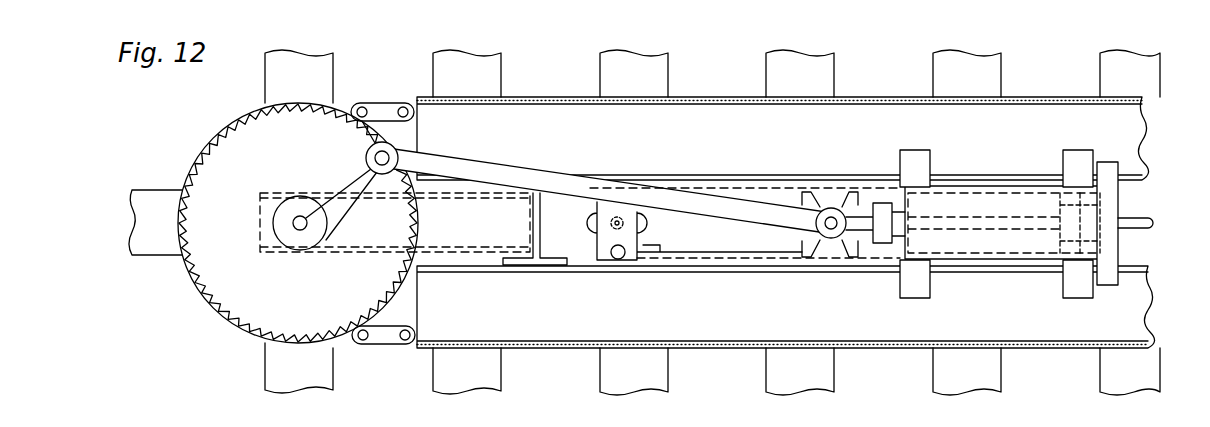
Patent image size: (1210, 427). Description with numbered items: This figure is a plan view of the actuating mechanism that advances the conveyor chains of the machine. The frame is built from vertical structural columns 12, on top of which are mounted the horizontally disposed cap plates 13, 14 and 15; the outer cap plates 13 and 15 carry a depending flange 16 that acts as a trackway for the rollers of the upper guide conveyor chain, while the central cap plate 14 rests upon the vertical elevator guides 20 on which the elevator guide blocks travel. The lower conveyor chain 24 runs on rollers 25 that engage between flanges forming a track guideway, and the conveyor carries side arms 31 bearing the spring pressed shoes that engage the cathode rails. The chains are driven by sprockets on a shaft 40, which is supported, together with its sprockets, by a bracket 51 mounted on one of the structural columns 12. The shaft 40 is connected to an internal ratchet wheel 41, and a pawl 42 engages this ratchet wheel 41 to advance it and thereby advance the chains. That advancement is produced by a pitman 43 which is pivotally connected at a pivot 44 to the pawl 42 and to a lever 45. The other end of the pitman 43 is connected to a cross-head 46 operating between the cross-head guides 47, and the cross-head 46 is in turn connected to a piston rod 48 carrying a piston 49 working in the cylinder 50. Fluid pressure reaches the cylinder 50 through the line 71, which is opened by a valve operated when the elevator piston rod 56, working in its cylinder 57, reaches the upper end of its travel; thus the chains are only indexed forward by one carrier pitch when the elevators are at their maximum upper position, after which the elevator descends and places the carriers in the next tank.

The vertical structural column 12 is at (538, 266).
The cap plate 13 is at (1136, 130).
The central cap plate 14 is at (640, 236).
The cap plate 15 is at (1140, 314).
The depending flange 16 is at (712, 98).
The vertical elevator guide 20 is at (620, 260).
The lower conveyor chain 24 is at (385, 345).
The roller 25 is at (411, 327).
The side arm 31 is at (655, 62).
The shaft 40 is at (296, 222).
The internal ratchet wheel 41 is at (234, 124).
The pawl 42 is at (366, 134).
The pitman 43 is at (522, 175).
The pivot 44 is at (402, 154).
The lever 45 is at (346, 201).
The cross-head 46 is at (832, 207).
The cross-head guide 47 is at (760, 186).
The piston rod 48 is at (862, 222).
The piston 49 is at (1066, 208).
The cylinder 50 is at (975, 206).
The bracket 51 is at (496, 220).
The piston rod 56 is at (606, 232).
The cylinder 57 is at (600, 223).
The line 71 is at (1147, 218).